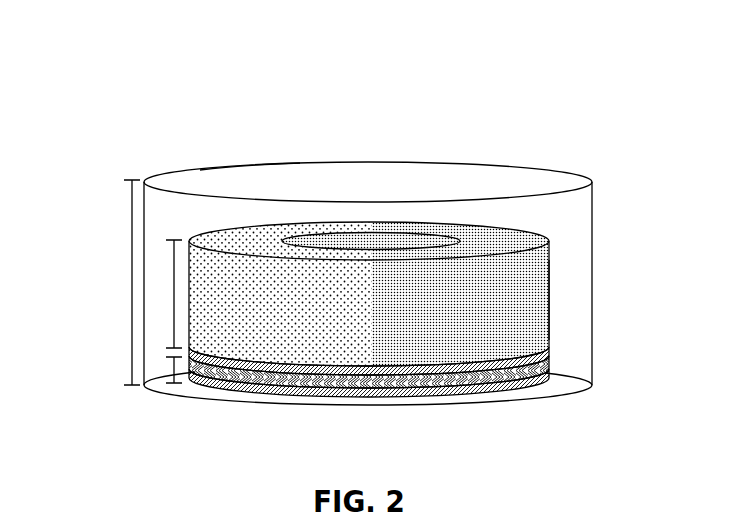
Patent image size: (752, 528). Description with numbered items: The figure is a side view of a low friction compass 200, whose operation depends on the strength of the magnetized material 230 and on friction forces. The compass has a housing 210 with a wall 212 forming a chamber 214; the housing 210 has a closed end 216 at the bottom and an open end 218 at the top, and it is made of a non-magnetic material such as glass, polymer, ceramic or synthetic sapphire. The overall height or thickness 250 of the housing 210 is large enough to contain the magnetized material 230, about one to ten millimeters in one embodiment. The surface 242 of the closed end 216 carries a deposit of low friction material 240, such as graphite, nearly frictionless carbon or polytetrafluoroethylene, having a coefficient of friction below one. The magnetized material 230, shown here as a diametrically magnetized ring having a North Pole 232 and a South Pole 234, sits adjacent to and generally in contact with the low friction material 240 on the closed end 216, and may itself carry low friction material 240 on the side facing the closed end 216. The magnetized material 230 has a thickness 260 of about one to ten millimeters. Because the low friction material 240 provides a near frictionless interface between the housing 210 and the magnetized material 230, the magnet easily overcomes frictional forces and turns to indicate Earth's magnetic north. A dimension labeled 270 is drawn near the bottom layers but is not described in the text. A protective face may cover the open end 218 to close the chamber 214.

The low friction compass 200 is at (577, 91).
The housing 210 is at (596, 388).
The wall 212 is at (592, 226).
The chamber 214 is at (250, 168).
The closed end 216 is at (440, 406).
The open end 218 is at (177, 169).
The magnetized material 230 is at (552, 270).
The North Pole 232 is at (416, 239).
The South Pole 234 is at (321, 239).
The low friction material 240 is at (549, 355).
The surface 242 is at (230, 377).
The height or thickness 250 is at (132, 270).
The thickness 260 is at (174, 298).
The layer stack height 270 is at (170, 353).